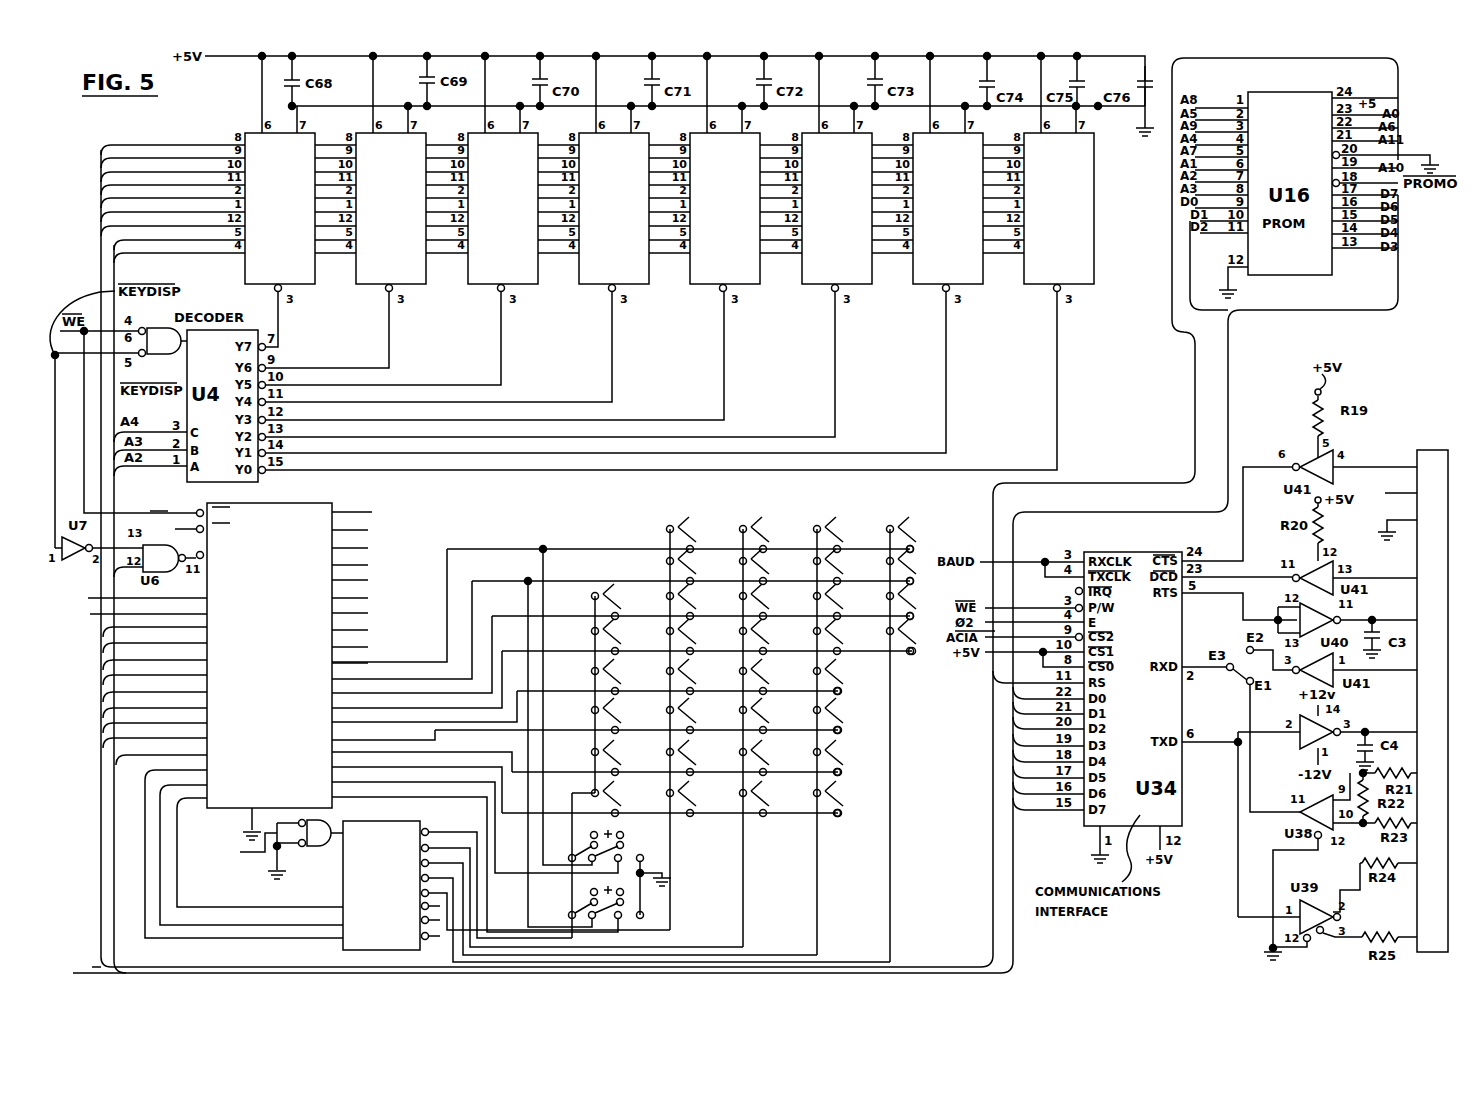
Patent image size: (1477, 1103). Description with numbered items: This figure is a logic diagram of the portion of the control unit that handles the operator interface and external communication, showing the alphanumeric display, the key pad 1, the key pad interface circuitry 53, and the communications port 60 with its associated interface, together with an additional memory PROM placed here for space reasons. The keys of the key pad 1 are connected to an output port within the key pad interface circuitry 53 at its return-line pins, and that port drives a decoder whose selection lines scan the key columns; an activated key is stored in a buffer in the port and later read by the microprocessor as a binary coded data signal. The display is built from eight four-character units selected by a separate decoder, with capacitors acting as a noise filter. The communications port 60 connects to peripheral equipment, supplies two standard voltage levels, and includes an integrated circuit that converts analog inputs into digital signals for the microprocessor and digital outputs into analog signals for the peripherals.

The key pad 1 is at (597, 509).
The key pad interface circuitry 53 is at (467, 717).
The communications port 60 is at (1404, 685).